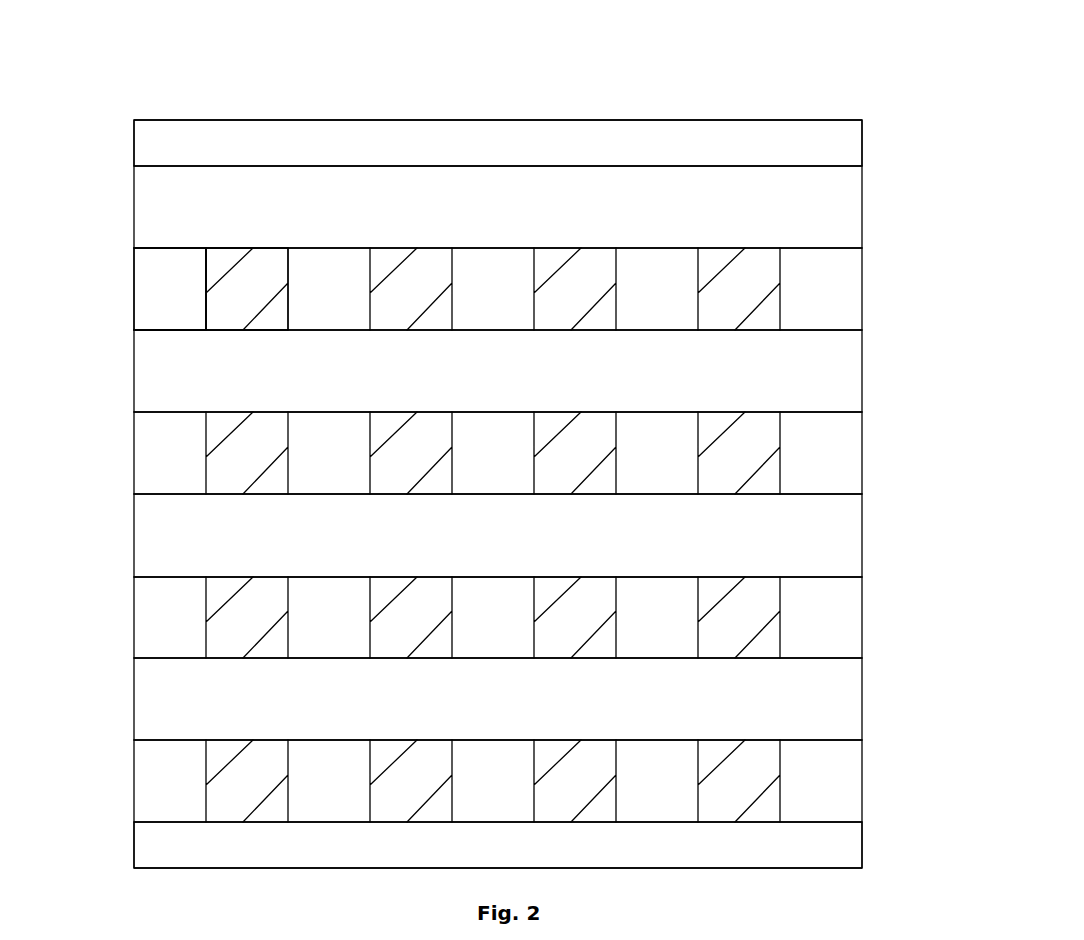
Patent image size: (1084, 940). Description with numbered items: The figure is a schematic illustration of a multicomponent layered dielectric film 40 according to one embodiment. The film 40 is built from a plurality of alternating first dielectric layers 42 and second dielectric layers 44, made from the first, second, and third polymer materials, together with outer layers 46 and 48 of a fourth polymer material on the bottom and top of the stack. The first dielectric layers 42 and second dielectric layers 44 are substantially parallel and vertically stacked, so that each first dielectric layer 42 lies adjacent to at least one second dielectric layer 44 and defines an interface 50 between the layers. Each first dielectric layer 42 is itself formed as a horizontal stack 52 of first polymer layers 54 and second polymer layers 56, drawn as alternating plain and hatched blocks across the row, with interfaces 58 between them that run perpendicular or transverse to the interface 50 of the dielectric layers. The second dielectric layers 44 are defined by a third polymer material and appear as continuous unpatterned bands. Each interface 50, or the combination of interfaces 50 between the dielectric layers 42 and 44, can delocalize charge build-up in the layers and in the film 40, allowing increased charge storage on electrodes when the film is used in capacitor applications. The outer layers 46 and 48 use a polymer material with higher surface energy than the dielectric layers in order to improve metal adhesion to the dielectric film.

The multicomponent layered dielectric film 40 is at (473, 62).
The first dielectric layers 42 is at (862, 289).
The second dielectric layers 44 is at (862, 202).
The outer layer 46 is at (862, 838).
The outer layer 48 is at (862, 129).
The interface 50 is at (122, 236).
The horizontal stack 52 is at (124, 285).
The first polymer layers 54 is at (150, 350).
The second polymer layers 56 is at (235, 348).
The interfaces 58 is at (198, 350).